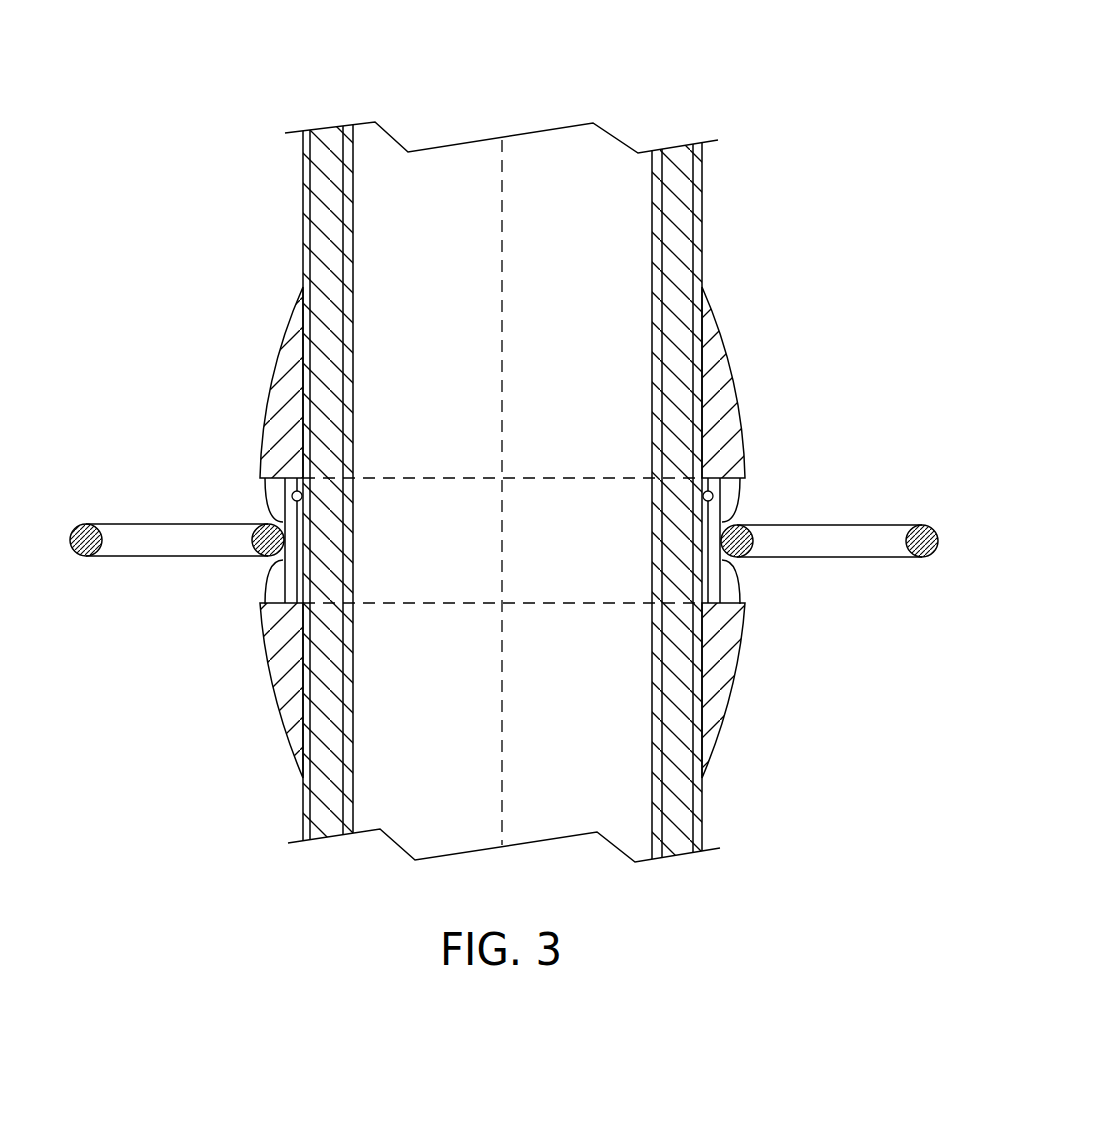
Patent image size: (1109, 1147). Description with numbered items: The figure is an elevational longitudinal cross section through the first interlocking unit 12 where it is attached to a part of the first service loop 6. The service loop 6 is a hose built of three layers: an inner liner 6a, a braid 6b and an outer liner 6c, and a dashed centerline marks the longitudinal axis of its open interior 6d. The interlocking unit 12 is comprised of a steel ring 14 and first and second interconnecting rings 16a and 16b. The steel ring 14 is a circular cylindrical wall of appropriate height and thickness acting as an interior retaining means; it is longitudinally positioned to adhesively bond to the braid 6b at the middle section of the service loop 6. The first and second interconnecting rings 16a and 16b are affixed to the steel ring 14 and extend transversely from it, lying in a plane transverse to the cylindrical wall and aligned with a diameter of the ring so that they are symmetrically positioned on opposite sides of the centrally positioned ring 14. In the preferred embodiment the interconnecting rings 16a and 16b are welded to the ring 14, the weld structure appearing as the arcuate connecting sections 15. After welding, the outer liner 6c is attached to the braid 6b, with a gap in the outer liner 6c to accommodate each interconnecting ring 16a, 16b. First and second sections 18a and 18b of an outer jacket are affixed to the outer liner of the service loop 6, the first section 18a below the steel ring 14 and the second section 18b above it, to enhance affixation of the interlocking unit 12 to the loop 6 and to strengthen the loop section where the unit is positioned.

The service loop 6 is at (752, 48).
The inner liner 6a is at (640, 153).
The braid 6b is at (673, 152).
The outer liner 6c is at (702, 167).
The lumen 6d is at (490, 305).
The first interlocking unit 12 is at (878, 645).
The steel ring 14 is at (690, 529).
The arcuate connecting sections 15 is at (277, 517).
The first interconnecting ring 16a is at (920, 530).
The second interconnecting ring 16b is at (80, 524).
The first section of outer jacket 18a is at (280, 697).
The second section of outer jacket 18b is at (272, 406).